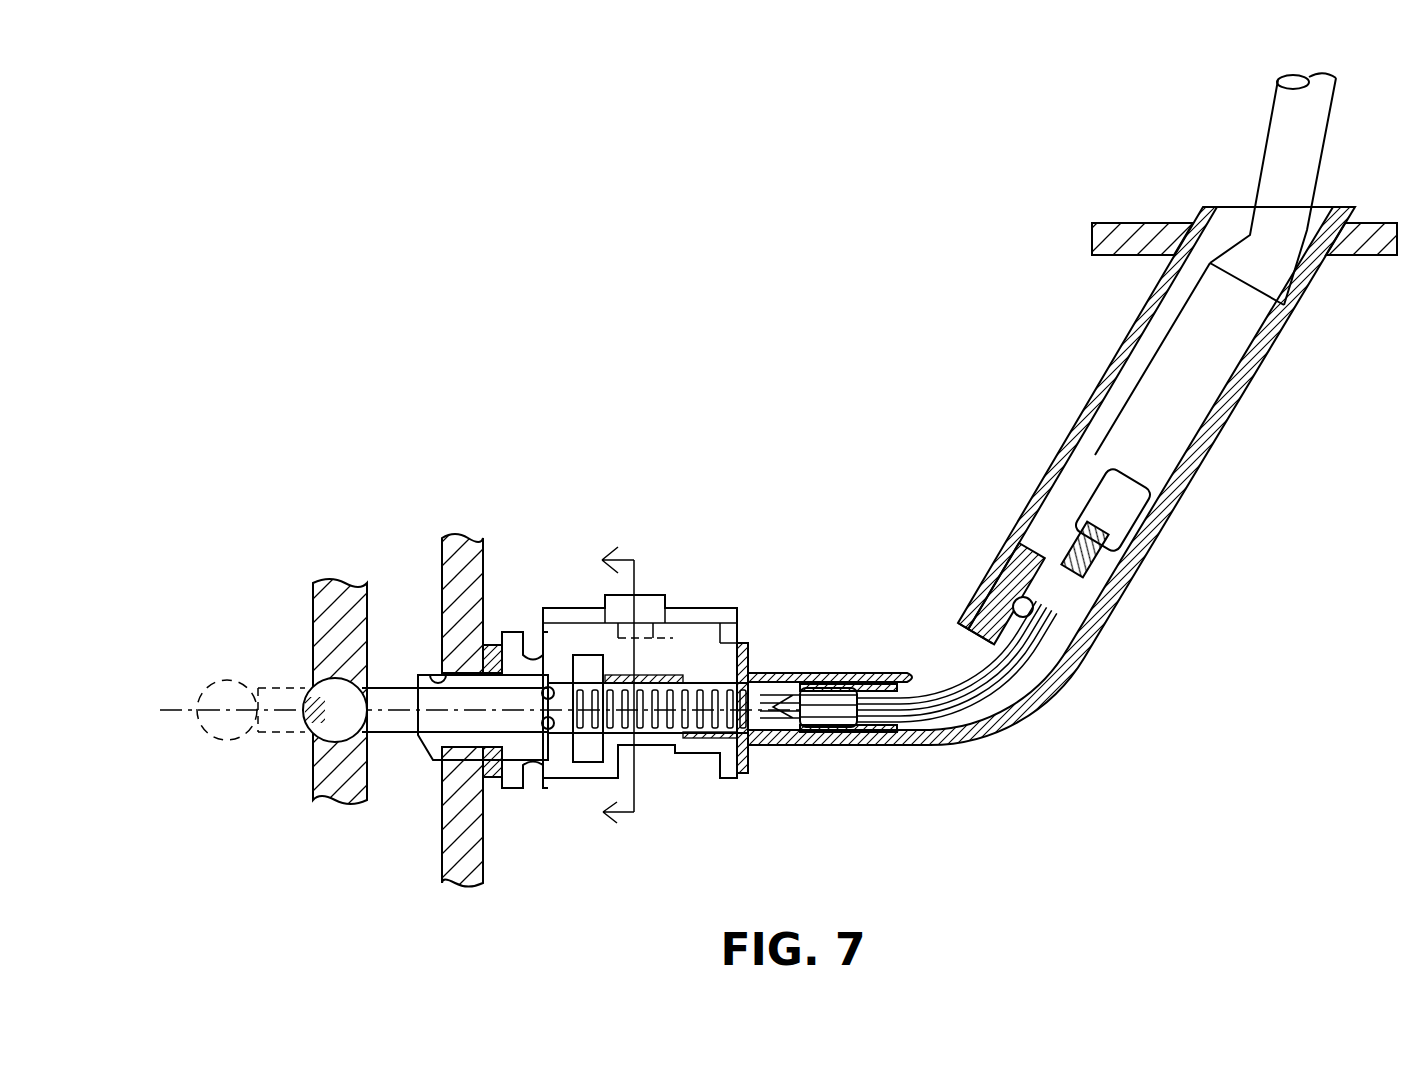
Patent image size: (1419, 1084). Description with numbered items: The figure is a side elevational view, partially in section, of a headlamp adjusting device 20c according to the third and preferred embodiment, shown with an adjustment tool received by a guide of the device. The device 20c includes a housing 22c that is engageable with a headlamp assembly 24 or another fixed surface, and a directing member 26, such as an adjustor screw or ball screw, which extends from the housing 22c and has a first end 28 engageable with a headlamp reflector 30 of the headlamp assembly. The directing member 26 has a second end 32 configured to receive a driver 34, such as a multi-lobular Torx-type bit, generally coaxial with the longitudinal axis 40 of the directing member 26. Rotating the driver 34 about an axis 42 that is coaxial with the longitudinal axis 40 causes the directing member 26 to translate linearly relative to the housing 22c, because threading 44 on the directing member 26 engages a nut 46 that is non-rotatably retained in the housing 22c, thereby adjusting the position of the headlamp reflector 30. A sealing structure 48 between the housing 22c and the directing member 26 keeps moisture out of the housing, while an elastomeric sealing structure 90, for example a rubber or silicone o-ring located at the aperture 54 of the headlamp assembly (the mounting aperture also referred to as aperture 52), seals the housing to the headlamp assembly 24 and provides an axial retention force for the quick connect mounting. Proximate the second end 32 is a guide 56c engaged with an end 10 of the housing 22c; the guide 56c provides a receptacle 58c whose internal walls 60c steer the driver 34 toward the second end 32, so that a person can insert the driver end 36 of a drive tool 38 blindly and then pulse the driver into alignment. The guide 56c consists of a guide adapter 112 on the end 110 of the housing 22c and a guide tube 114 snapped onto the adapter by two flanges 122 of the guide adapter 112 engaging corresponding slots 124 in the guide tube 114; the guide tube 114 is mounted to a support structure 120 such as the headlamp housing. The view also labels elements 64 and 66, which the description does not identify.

The end of housing 10 is at (643, 689).
The device 20c is at (719, 503).
The housing 22c is at (572, 600).
The headlamp assembly 24 is at (450, 540).
The directing member 26 is at (270, 723).
The first end 28 is at (307, 693).
The headlamp reflector 30 is at (312, 777).
The second end 32 is at (753, 668).
The driver 34 is at (785, 732).
The driver end 36 is at (757, 783).
The drive tool 38 is at (1243, 149).
The longitudinal axis 40 is at (398, 707).
The axis 42 is at (813, 697).
The threading 44 is at (697, 690).
The nut 46 is at (580, 668).
The sealing structure 48 is at (548, 740).
The aperture 52 is at (437, 677).
The aperture 54 is at (492, 647).
The guide 56c is at (999, 430).
The receptacle 58c is at (1102, 394).
The internal walls 60c is at (1047, 520).
The bend 64 is at (1003, 695).
The piston 66 is at (1195, 395).
The sealing structure 90 is at (490, 777).
The end of housing 110 is at (740, 627).
The guide adapter 112 is at (933, 750).
The guide tube 114 is at (1210, 474).
The support structure 120 is at (1127, 232).
The flanges 122 is at (1000, 590).
The slots 124 is at (1005, 596).